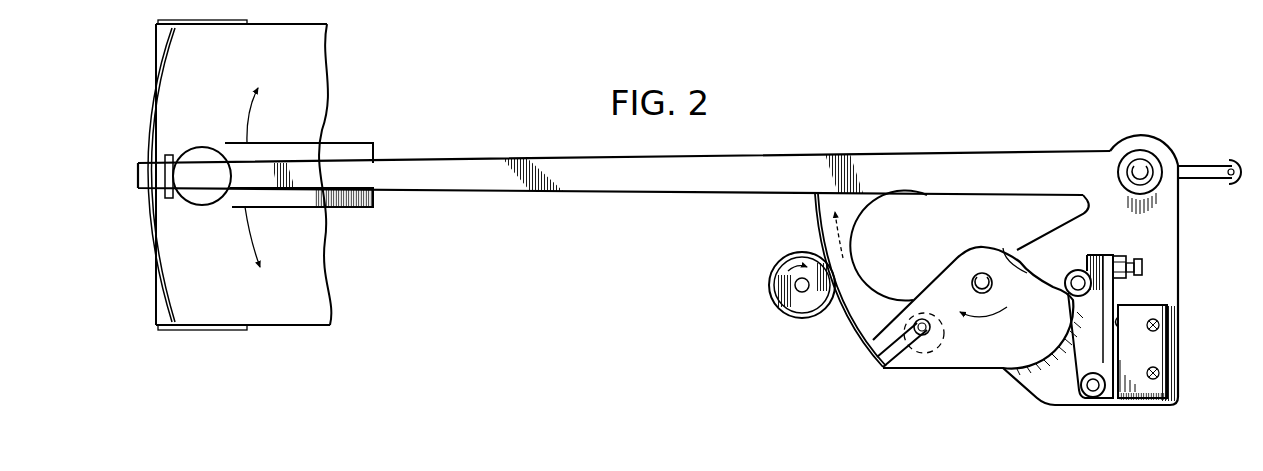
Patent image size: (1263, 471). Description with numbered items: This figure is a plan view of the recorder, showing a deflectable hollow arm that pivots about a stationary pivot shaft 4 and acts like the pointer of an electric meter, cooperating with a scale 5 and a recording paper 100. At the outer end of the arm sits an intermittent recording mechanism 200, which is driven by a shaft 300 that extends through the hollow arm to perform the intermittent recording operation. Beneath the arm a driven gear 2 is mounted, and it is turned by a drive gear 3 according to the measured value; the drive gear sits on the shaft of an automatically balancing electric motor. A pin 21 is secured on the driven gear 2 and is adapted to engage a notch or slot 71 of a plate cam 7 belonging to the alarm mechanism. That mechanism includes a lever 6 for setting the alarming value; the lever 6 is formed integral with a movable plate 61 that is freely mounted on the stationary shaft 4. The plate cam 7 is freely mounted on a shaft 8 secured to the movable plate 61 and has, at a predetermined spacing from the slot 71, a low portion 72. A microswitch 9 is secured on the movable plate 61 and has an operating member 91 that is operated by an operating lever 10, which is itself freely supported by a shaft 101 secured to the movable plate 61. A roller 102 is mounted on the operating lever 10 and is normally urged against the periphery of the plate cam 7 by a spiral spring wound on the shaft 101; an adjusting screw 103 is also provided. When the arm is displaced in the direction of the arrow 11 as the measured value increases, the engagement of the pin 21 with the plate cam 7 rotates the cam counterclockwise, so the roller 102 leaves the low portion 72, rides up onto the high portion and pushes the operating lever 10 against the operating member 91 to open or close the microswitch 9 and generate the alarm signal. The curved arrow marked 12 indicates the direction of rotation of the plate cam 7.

The driven gear 2 is at (865, 312).
The drive gear 3 is at (783, 305).
The pivot shaft 4 is at (1150, 172).
The scale 5 is at (163, 75).
The lever 6 is at (433, 166).
The plate cam 7 is at (997, 353).
The shaft 8 is at (984, 272).
The microswitch 9 is at (1178, 340).
The operating lever 10 is at (1115, 253).
The arrow 11 is at (851, 248).
The cam 12 is at (978, 311).
The pin 21 is at (921, 336).
The movable plate 61 is at (1180, 381).
The notch or slot 71 is at (893, 352).
The low portion 72 is at (1018, 249).
The operating member 91 is at (1118, 322).
The recording paper 100 is at (318, 49).
The shaft 101 is at (1095, 395).
The roller 102 is at (1068, 270).
The adjusting screw 103 is at (1142, 267).
The intermittent recording mechanism 200 is at (297, 197).
The shaft 300 is at (1236, 163).